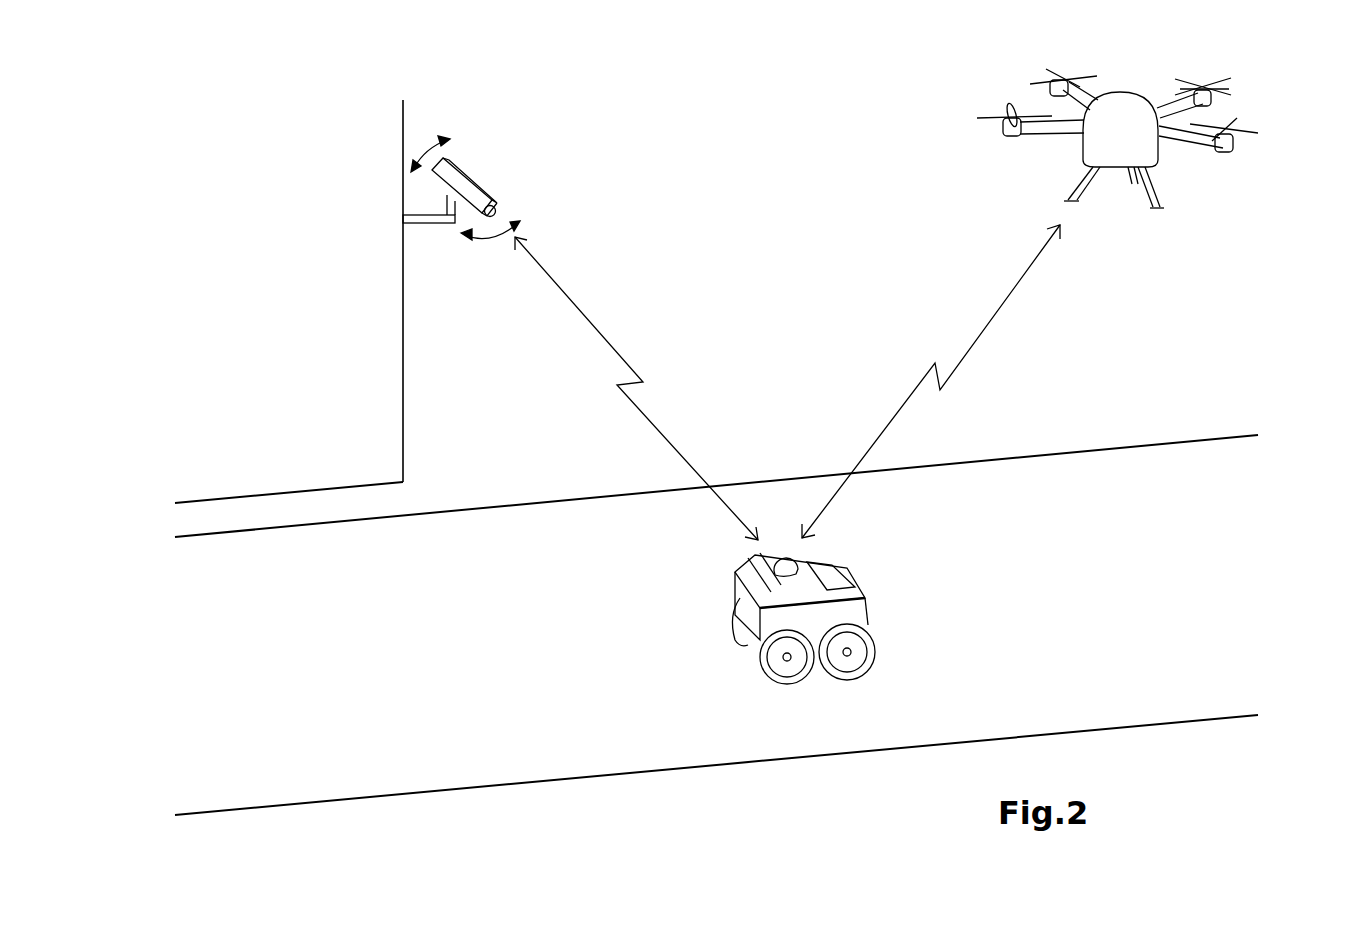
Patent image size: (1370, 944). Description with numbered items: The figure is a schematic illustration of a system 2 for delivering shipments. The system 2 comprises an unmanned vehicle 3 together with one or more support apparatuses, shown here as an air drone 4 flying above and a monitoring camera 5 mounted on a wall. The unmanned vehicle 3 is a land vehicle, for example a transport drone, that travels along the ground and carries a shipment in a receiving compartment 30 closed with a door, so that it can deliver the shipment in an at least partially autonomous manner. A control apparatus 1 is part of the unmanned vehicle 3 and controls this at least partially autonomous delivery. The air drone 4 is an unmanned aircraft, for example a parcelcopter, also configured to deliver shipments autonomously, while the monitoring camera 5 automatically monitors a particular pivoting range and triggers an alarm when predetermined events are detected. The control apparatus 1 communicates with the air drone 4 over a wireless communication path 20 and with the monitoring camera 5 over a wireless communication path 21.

The control apparatus 1 is at (799, 590).
The system 2 is at (1304, 261).
The unmanned vehicle 3 is at (742, 600).
The air drone 4 is at (1126, 142).
The monitoring camera 5 is at (478, 178).
The wireless communication path 20 is at (988, 329).
The wireless communication path 21 is at (594, 322).
The receiving compartment 30 is at (860, 582).